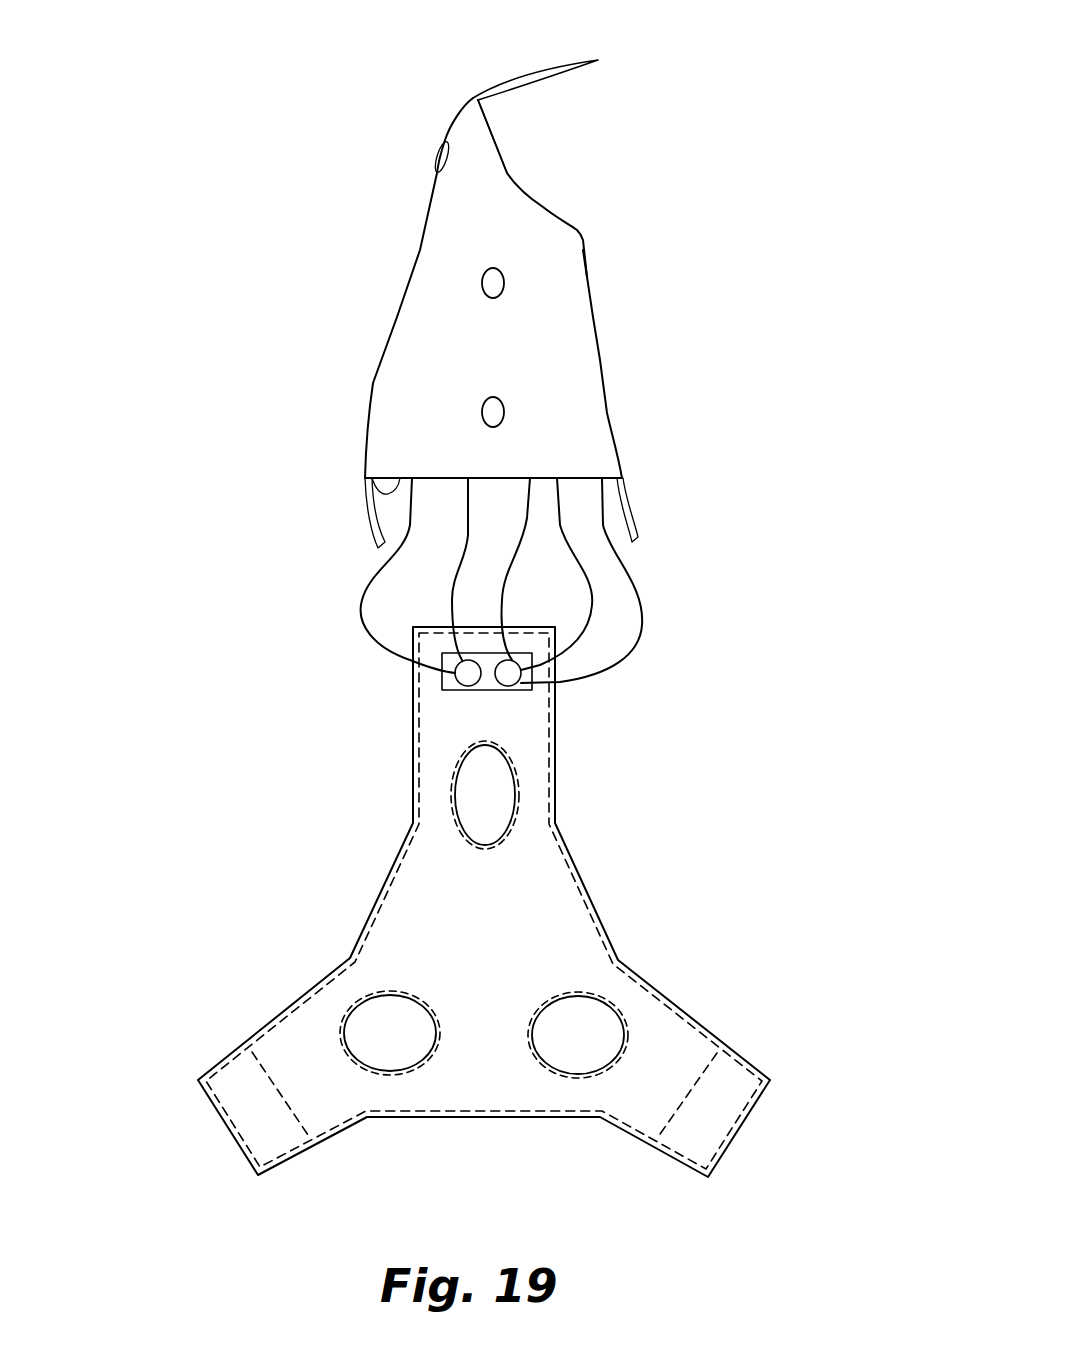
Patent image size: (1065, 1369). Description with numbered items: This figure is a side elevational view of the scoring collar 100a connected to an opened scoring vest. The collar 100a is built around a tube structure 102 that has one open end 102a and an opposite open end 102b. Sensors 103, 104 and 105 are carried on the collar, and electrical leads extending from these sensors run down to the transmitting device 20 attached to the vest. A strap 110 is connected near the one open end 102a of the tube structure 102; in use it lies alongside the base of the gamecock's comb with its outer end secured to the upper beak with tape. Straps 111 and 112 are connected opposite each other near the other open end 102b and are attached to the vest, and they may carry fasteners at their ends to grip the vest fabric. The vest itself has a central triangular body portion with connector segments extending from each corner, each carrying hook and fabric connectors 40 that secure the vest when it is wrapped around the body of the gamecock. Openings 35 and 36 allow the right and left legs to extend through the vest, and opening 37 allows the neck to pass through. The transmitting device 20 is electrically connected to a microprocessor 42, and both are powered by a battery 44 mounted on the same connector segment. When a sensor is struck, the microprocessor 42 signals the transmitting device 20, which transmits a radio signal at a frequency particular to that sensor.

The transmitting device 20 is at (436, 633).
The opening 35 is at (560, 1062).
The opening 36 is at (383, 1060).
The opening 37 is at (457, 782).
The hook and fabric connectors 40 is at (484, 927).
The microprocessor 42 is at (453, 657).
The battery 44 is at (524, 628).
The collar 100a is at (598, 358).
The tube structure 102 is at (580, 323).
The open end 102a is at (507, 178).
The open end 102b is at (365, 488).
The sensor 103 is at (437, 148).
The sensor 104 is at (502, 283).
The sensor 105 is at (502, 412).
The strap 110 is at (537, 63).
The strap 111 is at (367, 525).
The strap 112 is at (633, 513).